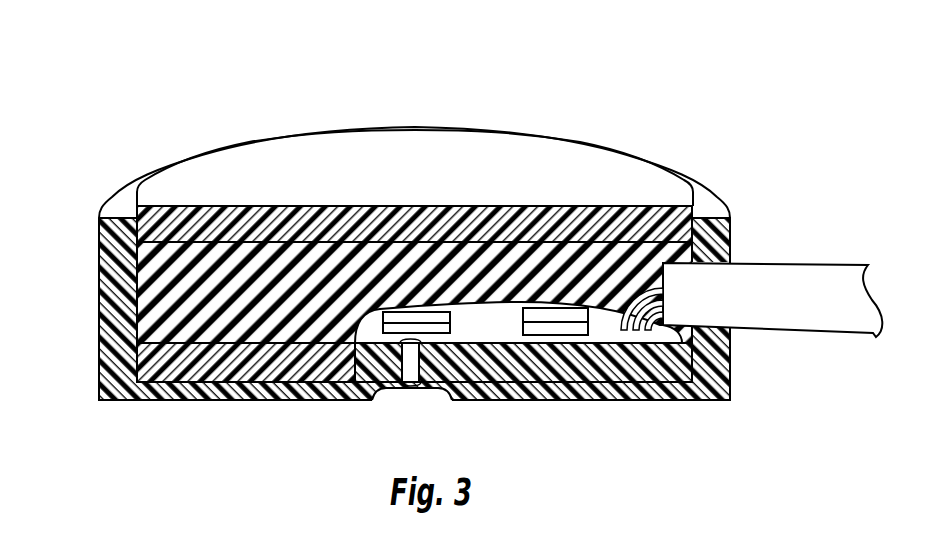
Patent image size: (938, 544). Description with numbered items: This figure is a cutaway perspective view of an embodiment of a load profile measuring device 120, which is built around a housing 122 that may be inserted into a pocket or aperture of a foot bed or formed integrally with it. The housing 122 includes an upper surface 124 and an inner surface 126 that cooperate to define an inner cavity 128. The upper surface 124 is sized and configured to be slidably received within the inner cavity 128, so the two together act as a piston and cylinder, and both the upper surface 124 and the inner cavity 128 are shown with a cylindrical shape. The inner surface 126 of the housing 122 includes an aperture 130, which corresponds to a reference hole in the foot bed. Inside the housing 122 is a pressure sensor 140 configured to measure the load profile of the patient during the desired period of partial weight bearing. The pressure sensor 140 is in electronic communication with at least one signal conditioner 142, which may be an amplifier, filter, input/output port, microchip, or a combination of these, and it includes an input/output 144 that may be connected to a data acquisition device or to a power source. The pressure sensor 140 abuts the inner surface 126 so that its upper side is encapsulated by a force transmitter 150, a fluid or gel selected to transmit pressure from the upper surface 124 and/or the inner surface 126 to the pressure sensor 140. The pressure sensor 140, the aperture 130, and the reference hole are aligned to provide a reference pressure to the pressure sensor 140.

The load profile measuring device 120 is at (147, 62).
The housing 122 is at (98, 168).
The upper surface 124 is at (528, 144).
The inner surface 126 is at (201, 390).
The inner cavity 128 is at (130, 315).
The aperture 130 is at (420, 403).
The pressure sensor 140 is at (397, 332).
The signal conditioner 142 is at (570, 327).
The input/output 144 is at (757, 257).
The force transmitter 150 is at (223, 272).